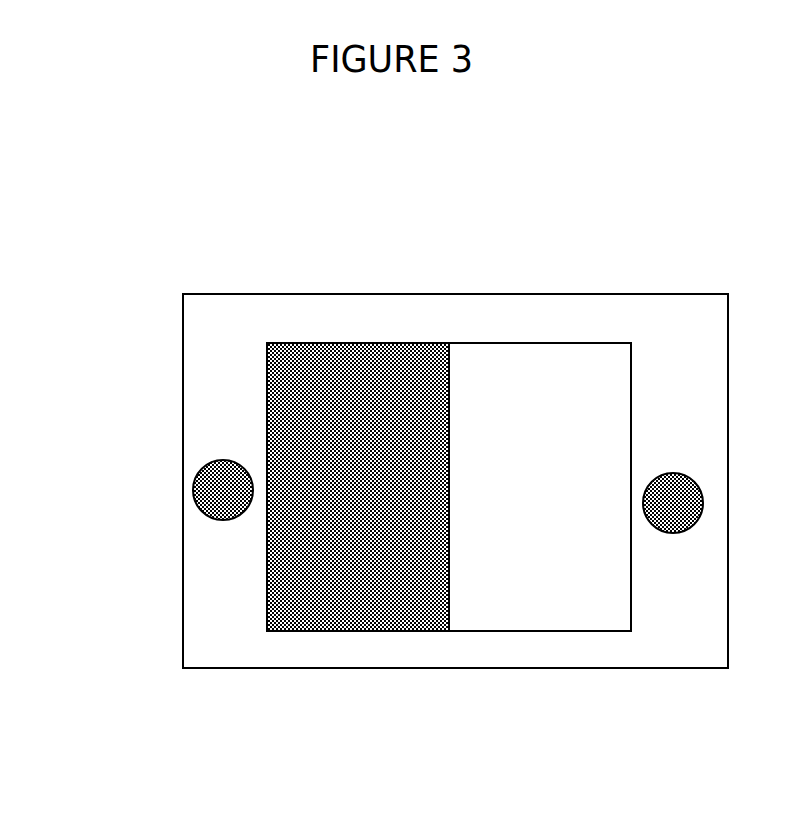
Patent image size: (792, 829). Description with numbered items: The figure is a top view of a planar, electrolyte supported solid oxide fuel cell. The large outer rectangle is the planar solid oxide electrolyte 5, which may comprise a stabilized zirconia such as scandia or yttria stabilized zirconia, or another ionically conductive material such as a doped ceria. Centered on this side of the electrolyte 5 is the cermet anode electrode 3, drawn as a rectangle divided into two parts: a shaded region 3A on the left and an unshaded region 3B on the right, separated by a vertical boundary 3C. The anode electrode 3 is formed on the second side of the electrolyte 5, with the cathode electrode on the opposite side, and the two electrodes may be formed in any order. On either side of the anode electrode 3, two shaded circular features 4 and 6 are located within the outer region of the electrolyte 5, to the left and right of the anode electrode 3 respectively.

The anode electrode 3 is at (461, 632).
The first region (anode side) 3A is at (342, 367).
The second region (cathode side) 3B is at (510, 378).
The boundary between first and second regions 3C is at (453, 362).
The inlet port 4 is at (193, 485).
The solid oxide electrolyte 5 is at (437, 318).
The outlet port 6 is at (703, 498).